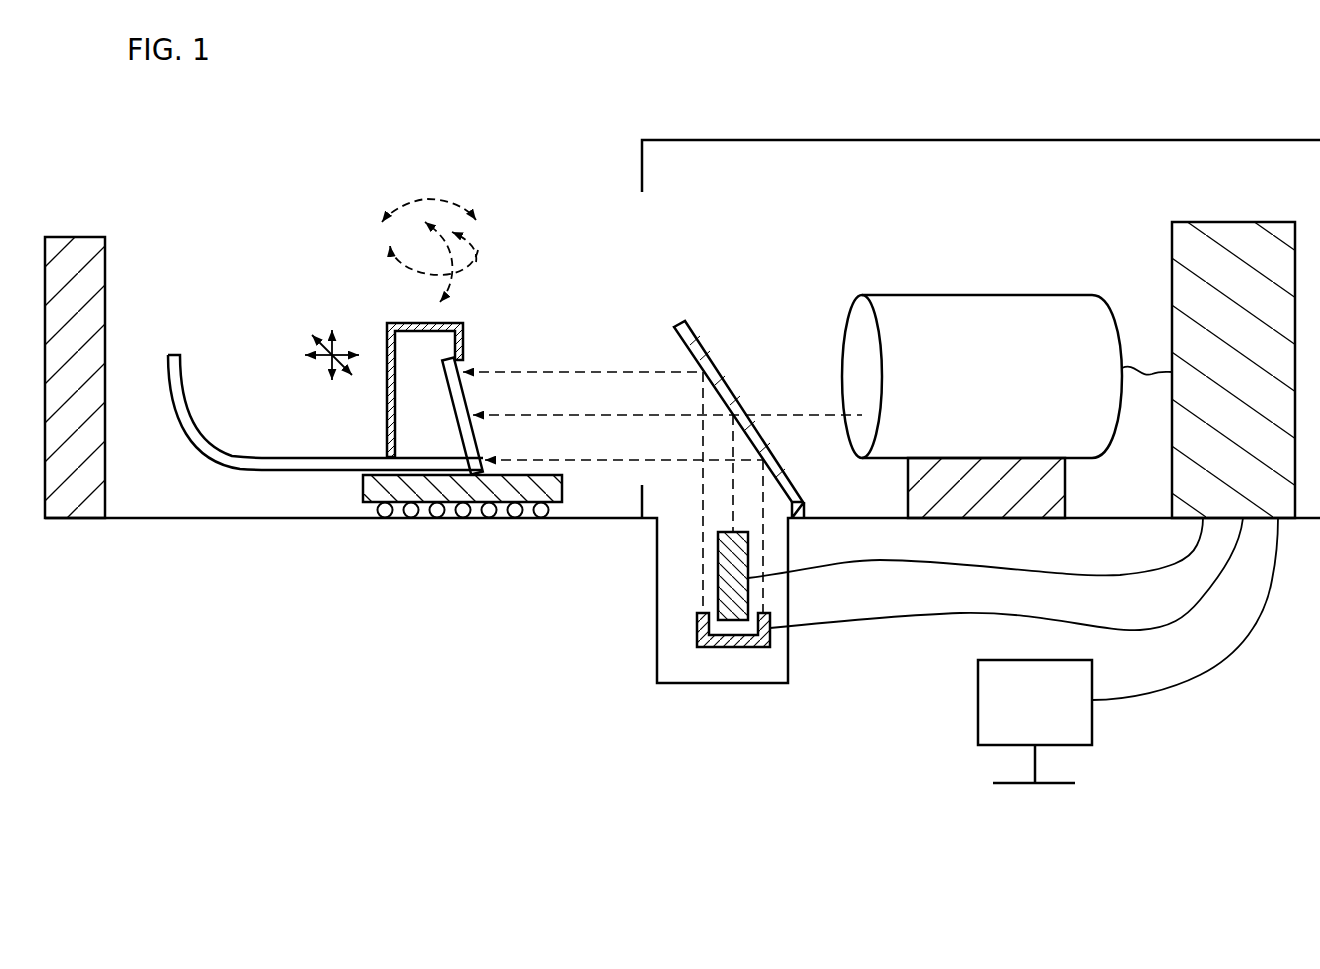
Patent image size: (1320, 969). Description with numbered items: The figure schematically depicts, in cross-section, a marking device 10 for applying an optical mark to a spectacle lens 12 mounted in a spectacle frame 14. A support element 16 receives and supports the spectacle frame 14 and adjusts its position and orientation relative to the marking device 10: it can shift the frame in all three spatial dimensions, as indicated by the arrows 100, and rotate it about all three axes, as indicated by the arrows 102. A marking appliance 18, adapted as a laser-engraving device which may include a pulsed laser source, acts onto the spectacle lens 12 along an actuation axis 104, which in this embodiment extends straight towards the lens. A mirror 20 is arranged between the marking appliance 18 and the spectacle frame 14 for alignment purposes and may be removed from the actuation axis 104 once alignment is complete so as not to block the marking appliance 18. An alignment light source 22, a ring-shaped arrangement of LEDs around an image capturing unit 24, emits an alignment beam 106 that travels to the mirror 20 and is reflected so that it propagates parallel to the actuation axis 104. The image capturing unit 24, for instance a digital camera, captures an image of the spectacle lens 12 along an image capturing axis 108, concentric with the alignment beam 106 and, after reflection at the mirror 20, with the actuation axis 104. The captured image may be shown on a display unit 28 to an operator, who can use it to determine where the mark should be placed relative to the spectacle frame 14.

The marking device 10 is at (548, 612).
The spectacle lens 12 is at (446, 437).
The spectacle frame 14 is at (449, 370).
The support element 16 is at (379, 500).
The marking appliance 18 is at (982, 295).
The mirror 20 is at (698, 345).
The alignment light source 22 is at (697, 633).
The image capturing unit 24 is at (718, 578).
The display unit 28 is at (978, 703).
The arrows 100 is at (306, 306).
The arrows 102 is at (398, 178).
The actuation axis 104 is at (530, 415).
The alignment beam 106 is at (604, 372).
The image capturing axis 108 is at (733, 492).